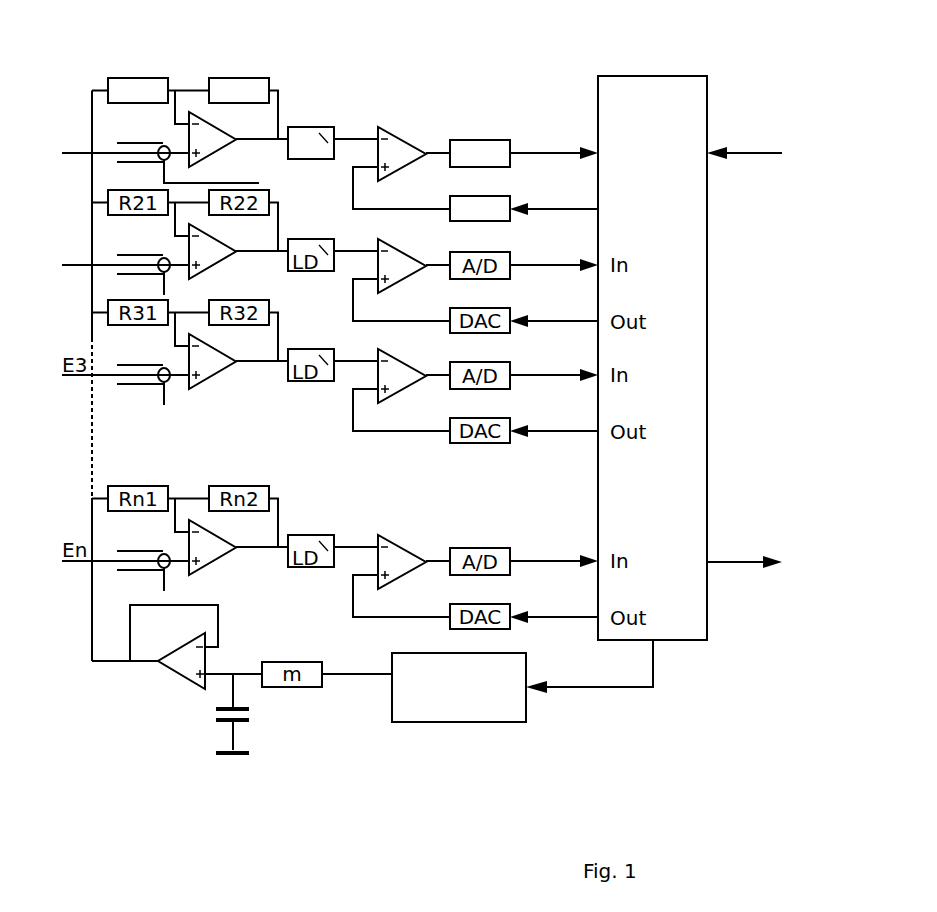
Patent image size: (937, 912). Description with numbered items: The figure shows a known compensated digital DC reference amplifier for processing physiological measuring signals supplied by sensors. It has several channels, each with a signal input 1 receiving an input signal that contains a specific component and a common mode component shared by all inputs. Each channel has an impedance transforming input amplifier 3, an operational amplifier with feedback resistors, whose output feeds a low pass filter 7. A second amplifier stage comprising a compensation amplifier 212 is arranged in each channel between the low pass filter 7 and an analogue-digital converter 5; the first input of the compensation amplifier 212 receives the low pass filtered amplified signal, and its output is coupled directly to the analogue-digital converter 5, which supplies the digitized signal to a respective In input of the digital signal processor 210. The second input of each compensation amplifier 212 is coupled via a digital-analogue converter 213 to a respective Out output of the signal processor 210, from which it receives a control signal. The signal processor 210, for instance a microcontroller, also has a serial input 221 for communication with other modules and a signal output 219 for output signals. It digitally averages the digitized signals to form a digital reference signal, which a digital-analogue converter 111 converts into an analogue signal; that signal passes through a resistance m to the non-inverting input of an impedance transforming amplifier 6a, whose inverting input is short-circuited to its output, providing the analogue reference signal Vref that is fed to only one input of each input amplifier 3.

The signal input 1 is at (73, 155).
The impedance transforming input amplifier 3 is at (197, 66).
The low pass filter 7 is at (312, 105).
The compensation amplifier 212 is at (401, 133).
The analogue-digital converter 5 is at (481, 140).
The digital signal processor 210 is at (653, 76).
The serial input 221 is at (753, 153).
The digital-analogue converter 213 is at (512, 222).
The signal output 219 is at (753, 562).
The impedance transforming amplifier 6a is at (173, 696).
The digital-analogue converter 111 is at (512, 722).